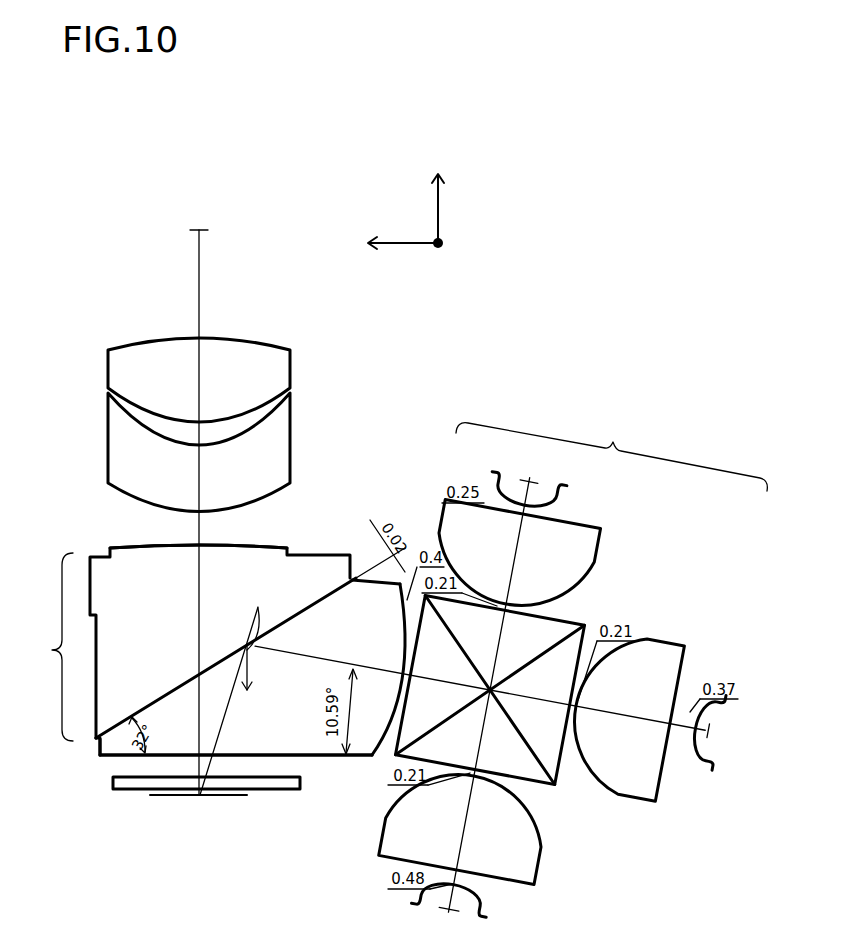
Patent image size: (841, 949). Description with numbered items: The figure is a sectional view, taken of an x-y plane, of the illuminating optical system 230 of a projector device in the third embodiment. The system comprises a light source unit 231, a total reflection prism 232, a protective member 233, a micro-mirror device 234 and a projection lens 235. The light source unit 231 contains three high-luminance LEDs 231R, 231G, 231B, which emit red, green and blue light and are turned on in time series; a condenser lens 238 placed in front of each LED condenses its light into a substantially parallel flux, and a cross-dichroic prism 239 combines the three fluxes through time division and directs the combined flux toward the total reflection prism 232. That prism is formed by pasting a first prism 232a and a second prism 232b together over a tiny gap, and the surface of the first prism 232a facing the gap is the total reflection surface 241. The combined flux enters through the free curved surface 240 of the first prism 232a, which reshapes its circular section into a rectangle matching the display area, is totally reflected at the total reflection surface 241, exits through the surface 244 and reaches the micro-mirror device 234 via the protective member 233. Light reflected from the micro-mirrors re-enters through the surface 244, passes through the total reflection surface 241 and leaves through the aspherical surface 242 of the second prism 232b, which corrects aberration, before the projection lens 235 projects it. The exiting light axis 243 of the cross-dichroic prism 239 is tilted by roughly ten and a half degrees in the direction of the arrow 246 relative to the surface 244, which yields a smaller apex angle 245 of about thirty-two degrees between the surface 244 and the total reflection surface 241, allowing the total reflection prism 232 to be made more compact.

The illuminating optical system 230 is at (557, 298).
The light source unit 231 is at (607, 664).
The high-luminance LED (blue-color LED) 231B is at (553, 492).
The high-luminance LED (green-color LED) 231G is at (698, 762).
The high-luminance LED (red-color LED) 231R is at (480, 912).
The total reflection prism 232 is at (39, 647).
The first prism 232a is at (315, 747).
The second prism 232b is at (262, 562).
The protective member 233 is at (130, 792).
The micro-mirror device 234 is at (228, 797).
The projection lens 235 is at (273, 428).
The condenser lens 238 is at (583, 557).
The cross-dichroic prism 239 is at (560, 775).
The surface (free curved surface) 240 is at (378, 748).
The total reflection surface 241 is at (327, 597).
The surface (aspherical surface) 242 is at (137, 545).
The exiting light axis 243 is at (295, 657).
The surface (exit surface / entry surface) 244 is at (257, 755).
The apex angle 245 is at (116, 745).
The arrow 246 is at (233, 690).